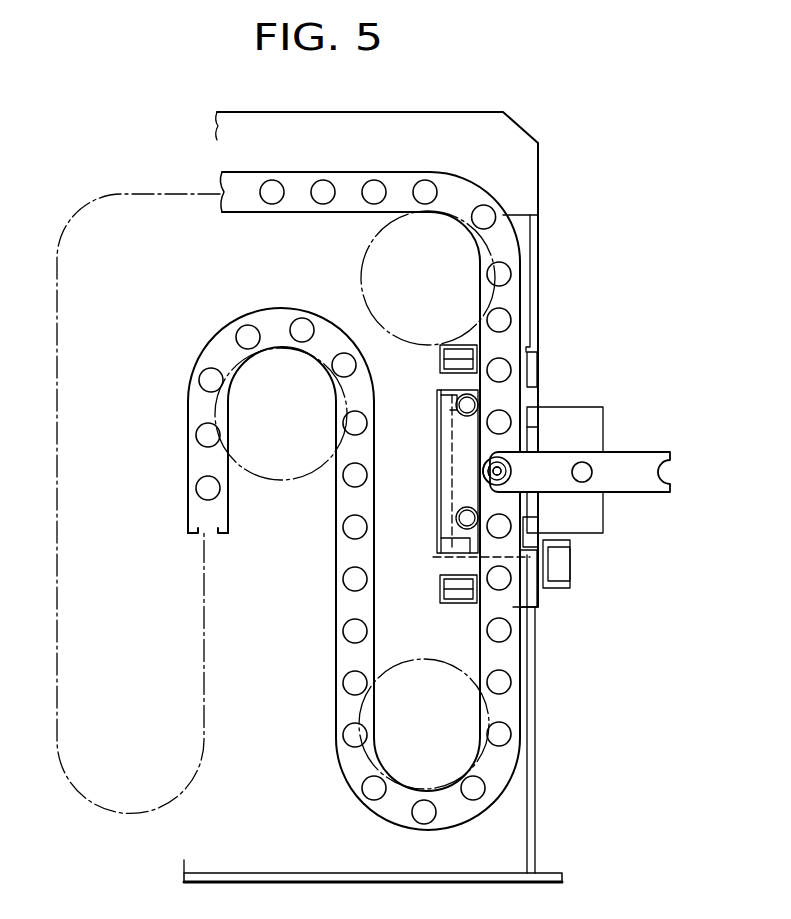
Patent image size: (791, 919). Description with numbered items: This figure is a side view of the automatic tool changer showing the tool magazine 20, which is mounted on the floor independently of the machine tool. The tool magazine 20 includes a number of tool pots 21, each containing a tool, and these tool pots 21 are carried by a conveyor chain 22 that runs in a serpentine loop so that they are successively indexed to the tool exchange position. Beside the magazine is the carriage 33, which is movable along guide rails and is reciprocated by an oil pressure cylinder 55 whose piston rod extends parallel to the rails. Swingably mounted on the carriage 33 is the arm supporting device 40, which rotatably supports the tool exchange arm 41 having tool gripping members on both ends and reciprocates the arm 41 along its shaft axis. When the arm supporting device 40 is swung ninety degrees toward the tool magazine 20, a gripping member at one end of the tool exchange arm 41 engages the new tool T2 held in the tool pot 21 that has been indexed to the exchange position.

The tool magazine 20 is at (545, 250).
The tool pot 21 is at (505, 321).
The conveyor chain 22 is at (520, 287).
The arm supporting device 40 is at (597, 431).
The tool exchange arm 41 is at (627, 463).
The carriage 33 is at (533, 528).
The oil pressure cylinder 55 is at (560, 567).
The new tool T2 is at (492, 477).